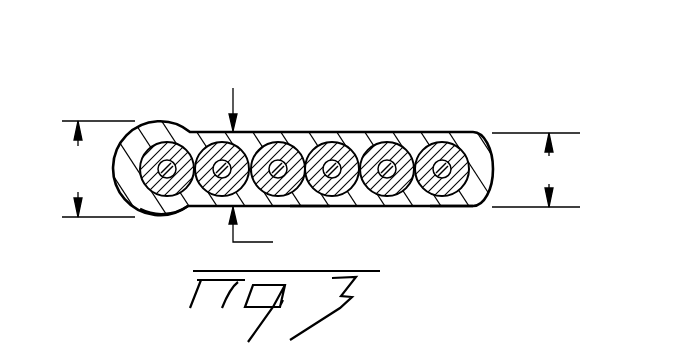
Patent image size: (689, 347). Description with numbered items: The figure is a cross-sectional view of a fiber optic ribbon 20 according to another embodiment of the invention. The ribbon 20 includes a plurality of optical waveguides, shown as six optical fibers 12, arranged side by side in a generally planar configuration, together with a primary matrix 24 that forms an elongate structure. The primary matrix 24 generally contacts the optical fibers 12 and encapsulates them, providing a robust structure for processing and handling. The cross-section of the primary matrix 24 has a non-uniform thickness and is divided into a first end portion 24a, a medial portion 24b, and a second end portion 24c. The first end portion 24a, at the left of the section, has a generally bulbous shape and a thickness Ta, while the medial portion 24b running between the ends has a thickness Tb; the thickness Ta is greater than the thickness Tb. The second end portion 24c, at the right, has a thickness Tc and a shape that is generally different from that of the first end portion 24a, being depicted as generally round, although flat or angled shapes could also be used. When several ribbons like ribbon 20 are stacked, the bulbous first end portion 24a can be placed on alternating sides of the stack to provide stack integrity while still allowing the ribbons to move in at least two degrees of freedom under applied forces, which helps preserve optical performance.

The ribbon 20 is at (165, 116).
The optical fibers 12 is at (270, 145).
The primary matrix 24 is at (358, 143).
The first end portion 24a is at (165, 207).
The medial portion 24b is at (310, 207).
The second end portion 24c is at (447, 202).
The thickness of first end portion Ta is at (96, 169).
The thickness of medial portion Tb is at (271, 174).
The thickness of second end portion Tc is at (536, 170).